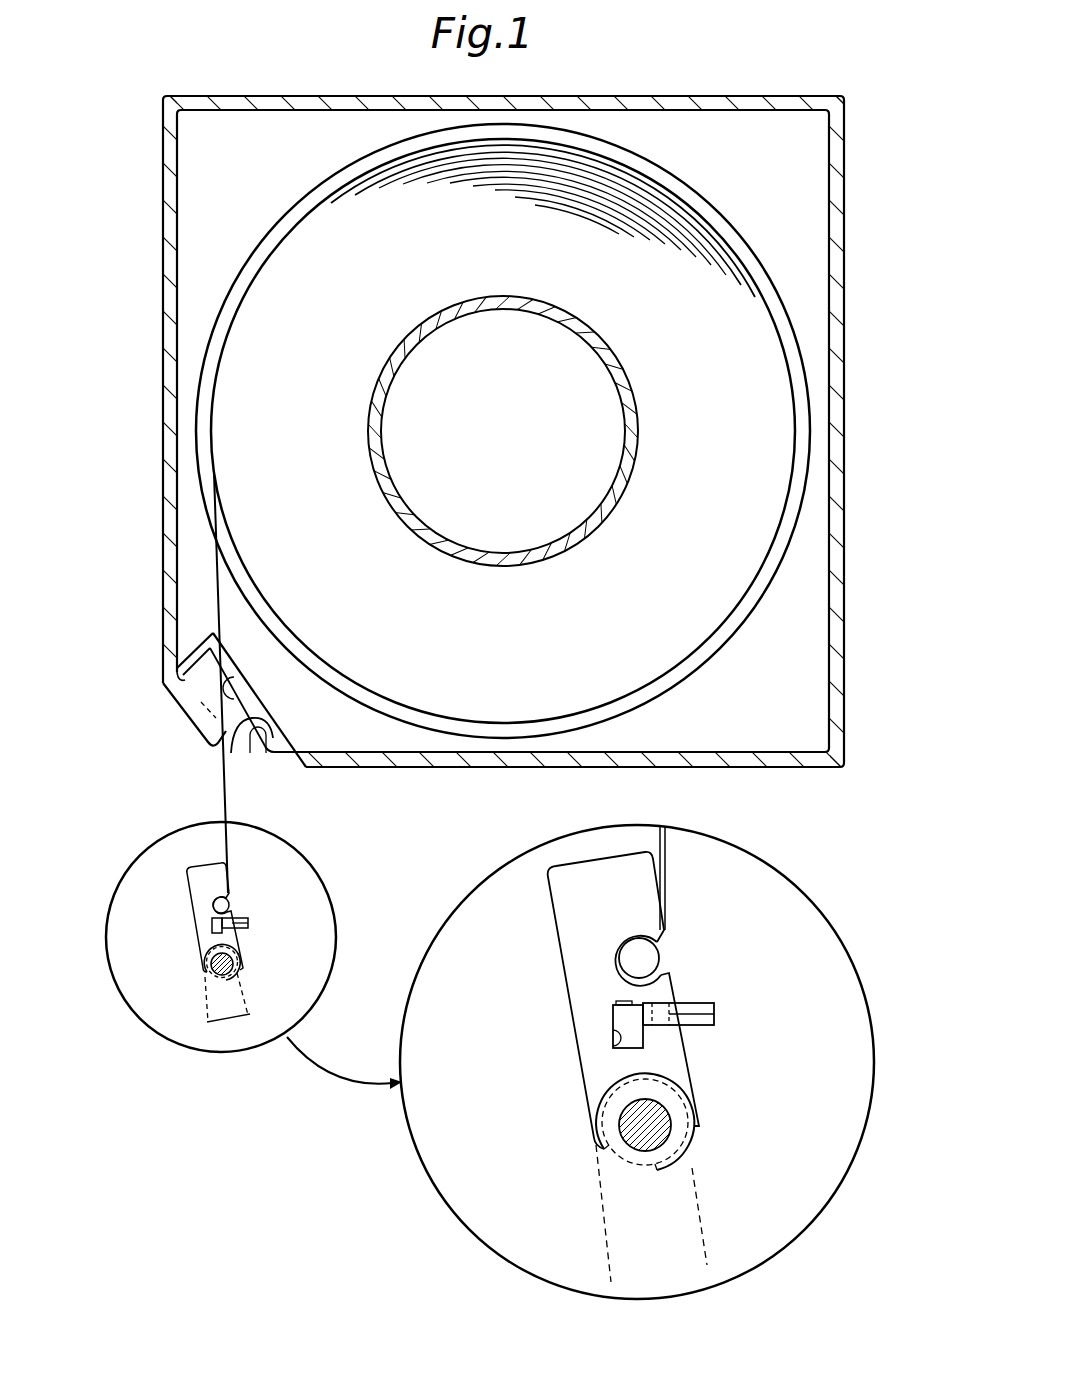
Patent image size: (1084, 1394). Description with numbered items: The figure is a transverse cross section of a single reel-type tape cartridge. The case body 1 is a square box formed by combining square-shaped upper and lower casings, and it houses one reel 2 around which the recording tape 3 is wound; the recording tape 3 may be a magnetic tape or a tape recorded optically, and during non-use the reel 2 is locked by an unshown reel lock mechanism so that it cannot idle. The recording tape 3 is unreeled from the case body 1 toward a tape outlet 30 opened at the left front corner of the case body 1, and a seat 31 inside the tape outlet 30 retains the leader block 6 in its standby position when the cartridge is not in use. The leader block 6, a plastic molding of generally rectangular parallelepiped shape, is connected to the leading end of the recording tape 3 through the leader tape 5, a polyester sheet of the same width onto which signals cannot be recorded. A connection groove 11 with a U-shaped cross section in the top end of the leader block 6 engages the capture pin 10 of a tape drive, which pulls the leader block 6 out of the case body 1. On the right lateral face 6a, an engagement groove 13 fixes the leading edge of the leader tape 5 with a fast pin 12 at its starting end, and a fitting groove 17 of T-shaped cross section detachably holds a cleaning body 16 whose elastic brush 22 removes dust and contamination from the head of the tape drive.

The case body 1 is at (845, 240).
The reel 2 is at (640, 396).
The recording tape 3 is at (217, 602).
The leader tape 5 is at (667, 852).
The leader block 6 is at (453, 938).
The right lateral face 6a is at (695, 1063).
The capture pin 10 is at (624, 1152).
The connection groove 11 is at (670, 1121).
The fast pin 12 is at (644, 958).
The engagement groove 13 is at (628, 950).
The cleaning body 16 is at (606, 1022).
The fitting groove 17 is at (626, 1050).
The brush 22 is at (693, 1001).
The tape outlet 30 is at (186, 708).
The seat 31 is at (248, 708).